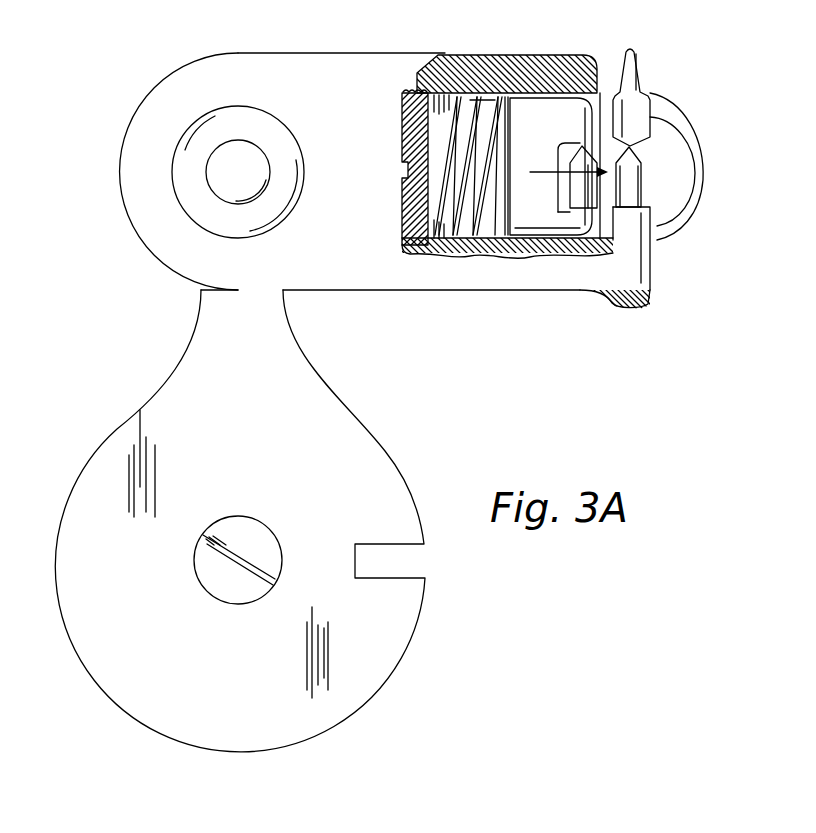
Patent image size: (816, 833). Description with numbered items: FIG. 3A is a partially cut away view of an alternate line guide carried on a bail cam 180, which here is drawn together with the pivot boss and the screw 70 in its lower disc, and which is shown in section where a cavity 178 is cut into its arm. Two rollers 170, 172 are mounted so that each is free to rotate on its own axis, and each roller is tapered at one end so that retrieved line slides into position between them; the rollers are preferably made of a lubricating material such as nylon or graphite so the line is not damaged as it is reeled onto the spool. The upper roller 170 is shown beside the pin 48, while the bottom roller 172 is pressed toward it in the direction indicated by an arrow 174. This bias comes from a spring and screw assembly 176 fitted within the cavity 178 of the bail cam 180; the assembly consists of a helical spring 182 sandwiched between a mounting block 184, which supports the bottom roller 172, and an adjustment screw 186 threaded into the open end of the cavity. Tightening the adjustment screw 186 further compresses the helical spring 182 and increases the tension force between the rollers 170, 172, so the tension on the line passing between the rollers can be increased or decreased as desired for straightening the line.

The pin 48 is at (633, 52).
The screw 70 is at (229, 518).
The roller 170 is at (644, 194).
The roller 172 is at (597, 140).
The arrow 174 is at (566, 163).
The spring and screw assembly 176 is at (392, 98).
The cavity 178 is at (467, 92).
The bail cam 180 is at (414, 336).
The helical spring 182 is at (483, 110).
The mounting block 184 is at (557, 135).
The adjustment screw 186 is at (402, 196).